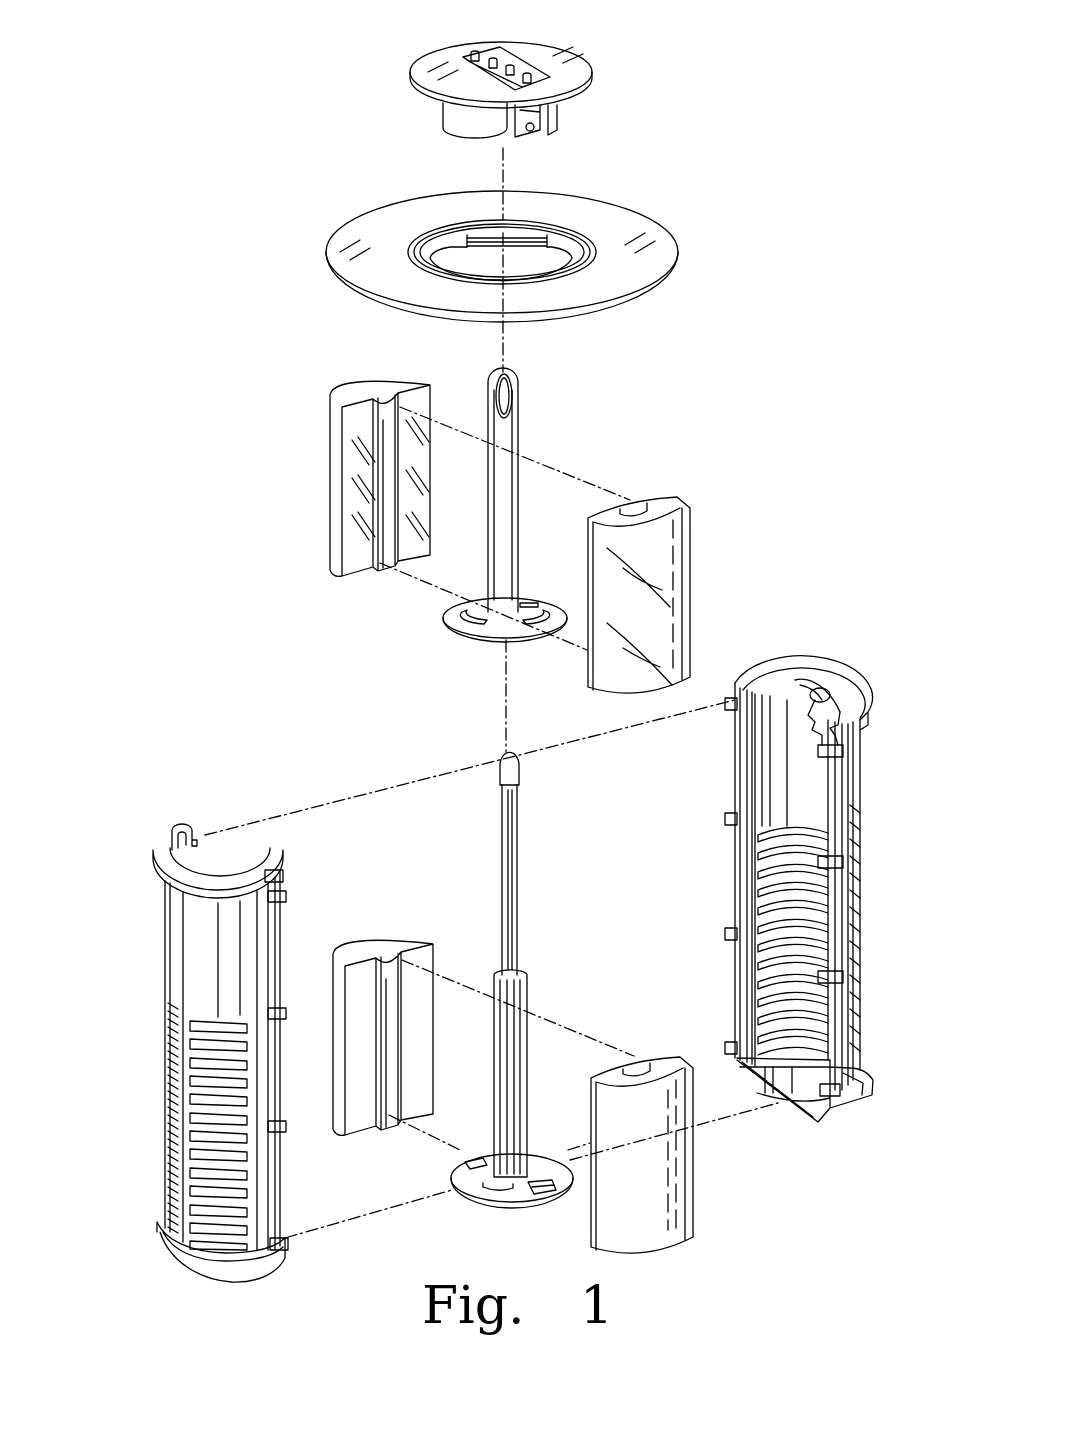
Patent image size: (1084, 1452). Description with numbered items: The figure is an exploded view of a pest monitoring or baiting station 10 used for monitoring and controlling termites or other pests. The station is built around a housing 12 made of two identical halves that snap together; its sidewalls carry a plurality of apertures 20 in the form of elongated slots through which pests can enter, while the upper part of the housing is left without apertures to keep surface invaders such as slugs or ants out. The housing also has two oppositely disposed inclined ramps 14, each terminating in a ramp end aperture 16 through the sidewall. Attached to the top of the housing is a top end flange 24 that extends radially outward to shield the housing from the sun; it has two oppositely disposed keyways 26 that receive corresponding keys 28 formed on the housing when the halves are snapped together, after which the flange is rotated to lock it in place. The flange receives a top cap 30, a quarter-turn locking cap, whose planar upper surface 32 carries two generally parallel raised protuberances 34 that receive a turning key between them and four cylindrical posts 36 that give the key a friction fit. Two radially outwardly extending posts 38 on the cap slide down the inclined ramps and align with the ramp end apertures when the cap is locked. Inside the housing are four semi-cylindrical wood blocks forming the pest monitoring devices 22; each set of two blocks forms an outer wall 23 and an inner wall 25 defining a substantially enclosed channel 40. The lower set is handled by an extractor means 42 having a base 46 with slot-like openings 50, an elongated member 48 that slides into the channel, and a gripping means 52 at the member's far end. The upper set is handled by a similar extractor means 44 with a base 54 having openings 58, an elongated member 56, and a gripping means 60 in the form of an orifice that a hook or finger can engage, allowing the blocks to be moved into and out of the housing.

The pest monitoring or baiting station 10 is at (852, 480).
The housing 12 is at (863, 770).
The inclined ramp 14 is at (808, 680).
The ramp end aperture 16 is at (845, 697).
The apertures 20 is at (860, 932).
The pest monitoring devices 22 is at (348, 385).
The outer wall 23 is at (670, 573).
The top end flange 24 is at (620, 285).
The inner wall 25 is at (352, 482).
The keyway 26 is at (555, 243).
The key 28 is at (740, 680).
The top cap 30 is at (392, 88).
The planar upper surface 32 is at (520, 47).
The raised protuberances 34 is at (548, 82).
The posts 36 is at (475, 50).
The radially outwardly extending posts 38 is at (548, 130).
The substantially enclosed channel 40 is at (388, 400).
The extractor means 42 is at (550, 888).
The extractor means 44 is at (548, 495).
The base 46 is at (495, 1195).
The elongated member 48 is at (529, 1000).
The openings 50 is at (540, 1200).
The gripping means 52 is at (500, 765).
The base 54 is at (490, 640).
The elongated member 56 is at (510, 438).
The openings 58 is at (465, 622).
The gripping means 60 is at (512, 400).